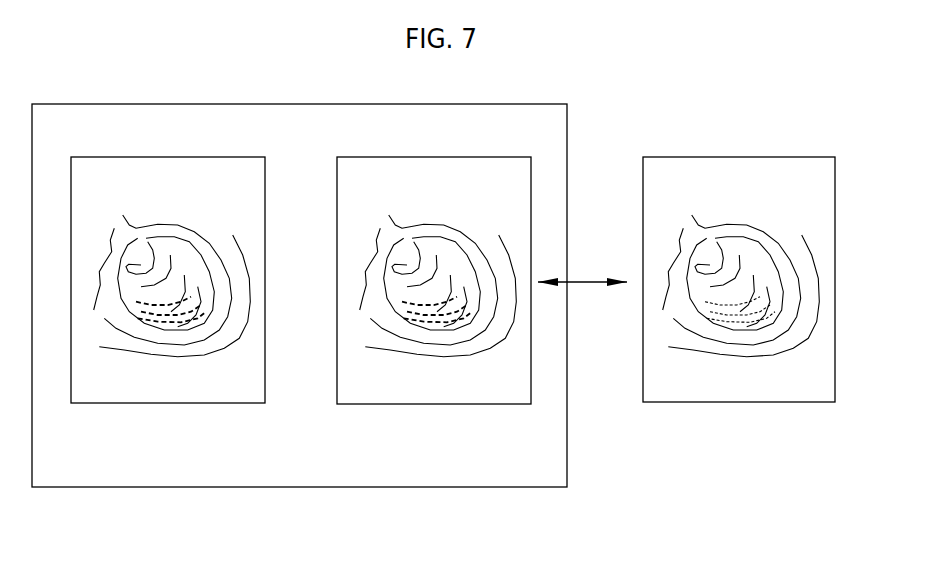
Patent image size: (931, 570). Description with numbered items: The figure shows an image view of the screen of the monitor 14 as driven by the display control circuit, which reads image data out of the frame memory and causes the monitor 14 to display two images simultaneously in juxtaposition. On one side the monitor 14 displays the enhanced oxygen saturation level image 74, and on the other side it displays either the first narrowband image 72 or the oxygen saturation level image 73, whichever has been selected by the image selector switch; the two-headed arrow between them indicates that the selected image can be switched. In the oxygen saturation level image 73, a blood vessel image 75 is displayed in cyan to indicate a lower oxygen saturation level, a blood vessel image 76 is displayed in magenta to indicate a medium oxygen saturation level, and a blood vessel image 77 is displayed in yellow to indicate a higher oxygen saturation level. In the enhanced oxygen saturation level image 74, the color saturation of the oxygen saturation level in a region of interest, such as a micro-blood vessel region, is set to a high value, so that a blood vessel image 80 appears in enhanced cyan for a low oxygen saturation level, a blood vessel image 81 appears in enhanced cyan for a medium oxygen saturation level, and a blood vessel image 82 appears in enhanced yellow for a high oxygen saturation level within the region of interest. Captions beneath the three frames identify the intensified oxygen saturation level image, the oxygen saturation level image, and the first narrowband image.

The monitor 14 is at (297, 488).
The first narrowband image 72 is at (752, 157).
The oxygen saturation level image 73 is at (440, 157).
The enhanced oxygen saturation level image 74 is at (173, 157).
The blood vessel image 75 is at (465, 274).
The blood vessel image 76 is at (472, 303).
The blood vessel image 77 is at (438, 303).
The blood vessel image 80 is at (196, 285).
The blood vessel image 81 is at (211, 302).
The blood vessel image 82 is at (180, 320).